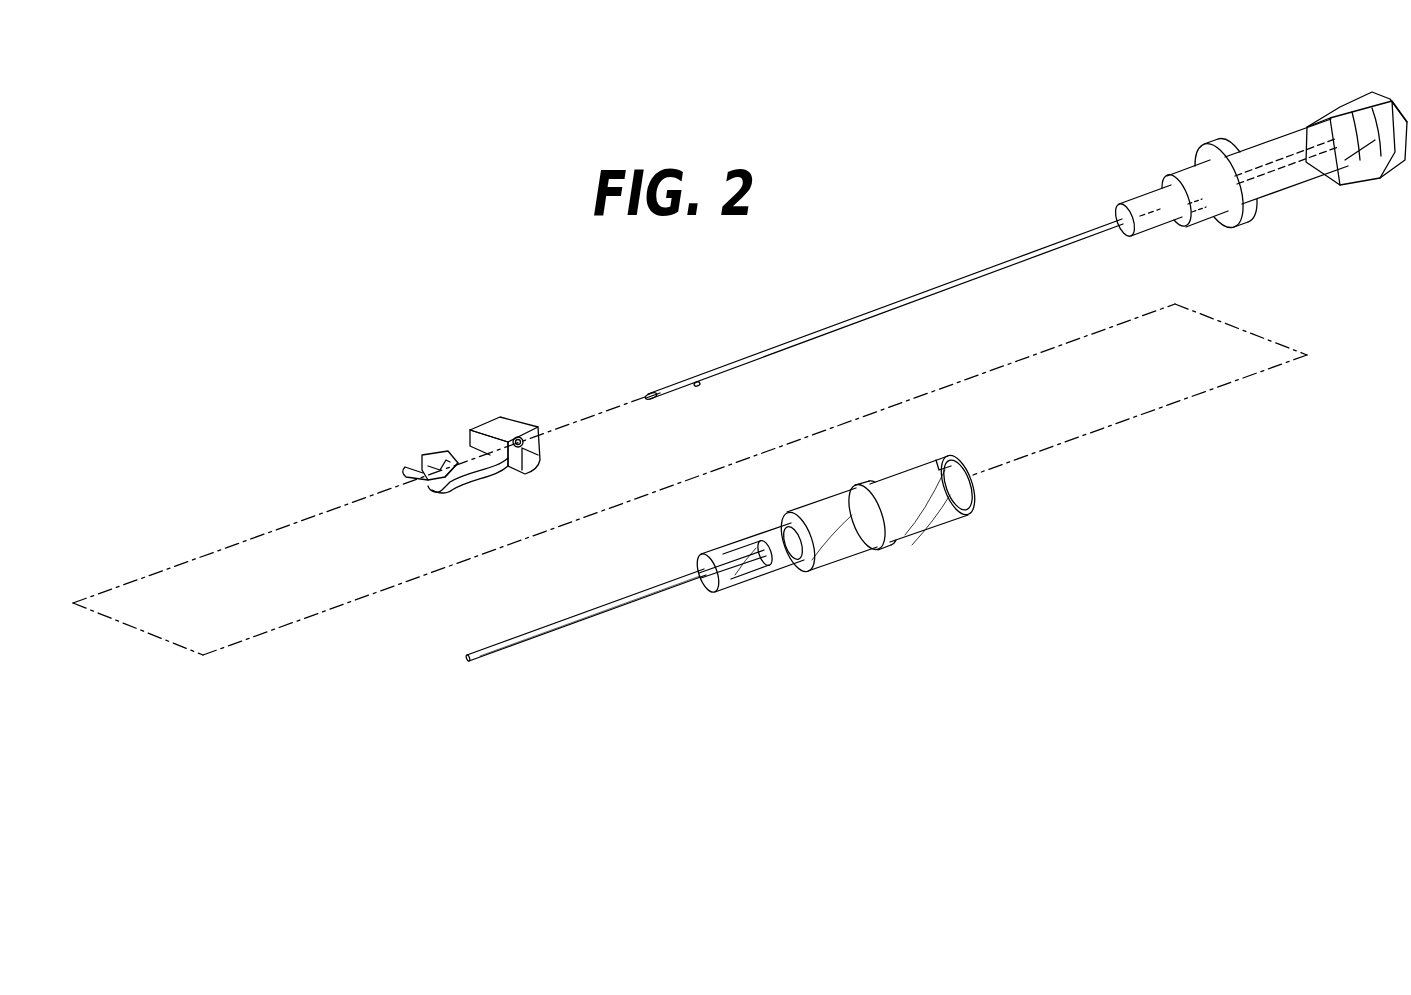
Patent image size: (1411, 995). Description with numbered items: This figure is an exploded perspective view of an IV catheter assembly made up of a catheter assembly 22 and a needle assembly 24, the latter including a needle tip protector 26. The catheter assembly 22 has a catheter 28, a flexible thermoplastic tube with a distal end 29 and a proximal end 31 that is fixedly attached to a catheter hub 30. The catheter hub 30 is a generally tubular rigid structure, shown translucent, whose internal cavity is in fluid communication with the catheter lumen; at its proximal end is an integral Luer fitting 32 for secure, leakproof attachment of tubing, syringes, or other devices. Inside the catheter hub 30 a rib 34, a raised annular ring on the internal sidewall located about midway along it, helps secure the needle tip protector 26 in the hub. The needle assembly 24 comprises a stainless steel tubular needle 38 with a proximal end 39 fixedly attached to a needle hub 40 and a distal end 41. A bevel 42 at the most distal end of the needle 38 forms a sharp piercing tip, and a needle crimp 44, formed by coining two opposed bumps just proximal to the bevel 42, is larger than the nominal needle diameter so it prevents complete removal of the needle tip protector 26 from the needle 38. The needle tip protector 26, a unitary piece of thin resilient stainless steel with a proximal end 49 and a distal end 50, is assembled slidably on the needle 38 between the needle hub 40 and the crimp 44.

The catheter assembly 22 is at (845, 610).
The needle assembly 24 is at (1117, 141).
The needle tip protector 26 is at (459, 404).
The catheter 28 is at (518, 630).
The distal end 29 is at (468, 665).
The catheter hub 30 is at (882, 465).
The proximal end 31 is at (690, 585).
The Luer fitting 32 is at (972, 493).
The rib 34 is at (885, 530).
The needle 38 is at (905, 282).
The proximal end 39 is at (1118, 212).
The needle hub 40 is at (1282, 134).
The distal end 41 is at (658, 393).
The bevel 42 is at (645, 396).
The needle crimp 44 is at (698, 388).
The proximal end 49 is at (515, 420).
The distal end 50 is at (405, 470).